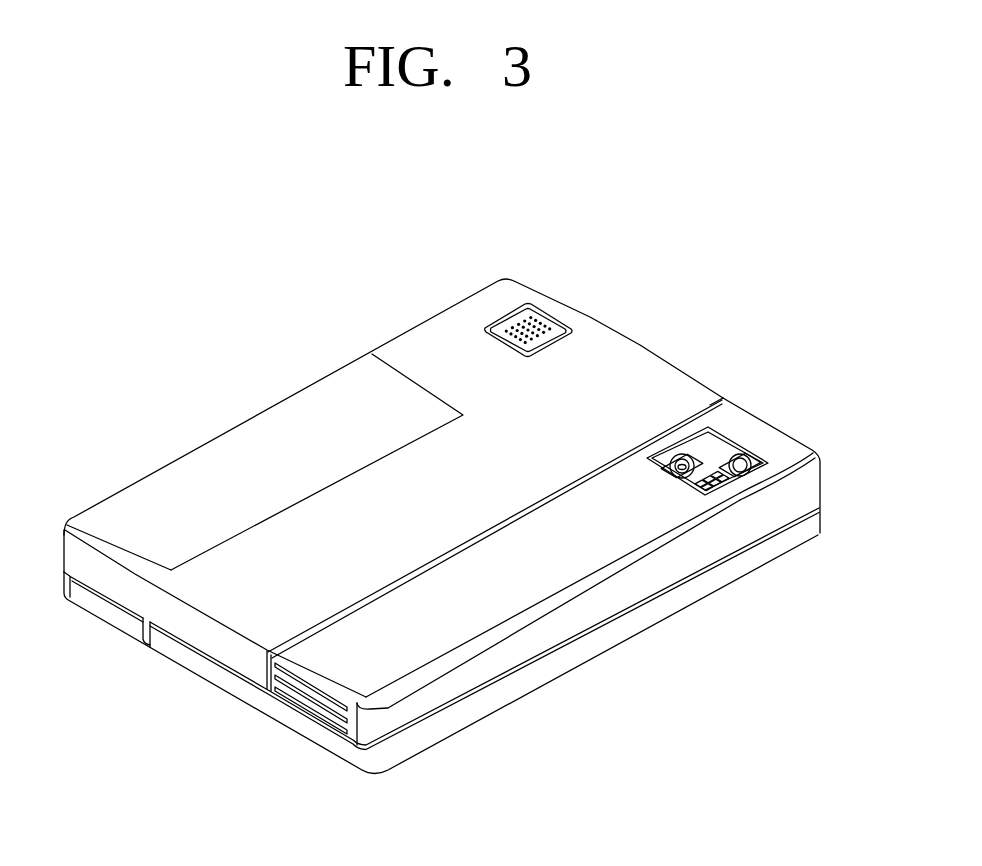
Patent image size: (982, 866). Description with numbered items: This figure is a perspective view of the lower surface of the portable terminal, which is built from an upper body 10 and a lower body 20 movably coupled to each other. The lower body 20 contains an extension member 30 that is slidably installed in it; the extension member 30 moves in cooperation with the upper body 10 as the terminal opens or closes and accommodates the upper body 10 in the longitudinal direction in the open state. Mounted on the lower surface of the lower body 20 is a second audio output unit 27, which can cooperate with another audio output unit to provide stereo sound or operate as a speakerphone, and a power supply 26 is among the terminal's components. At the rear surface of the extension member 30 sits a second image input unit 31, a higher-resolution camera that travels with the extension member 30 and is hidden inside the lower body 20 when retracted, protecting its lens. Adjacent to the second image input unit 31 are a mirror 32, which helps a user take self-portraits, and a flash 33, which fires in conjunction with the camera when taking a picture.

The upper body 10 is at (273, 727).
The lower body 20 is at (92, 621).
The power supply 26 is at (267, 440).
The second audio output unit 27 is at (533, 310).
The extension member 30 is at (832, 482).
The second image input unit 31 is at (683, 460).
The mirror 32 is at (742, 462).
The flash 33 is at (753, 493).